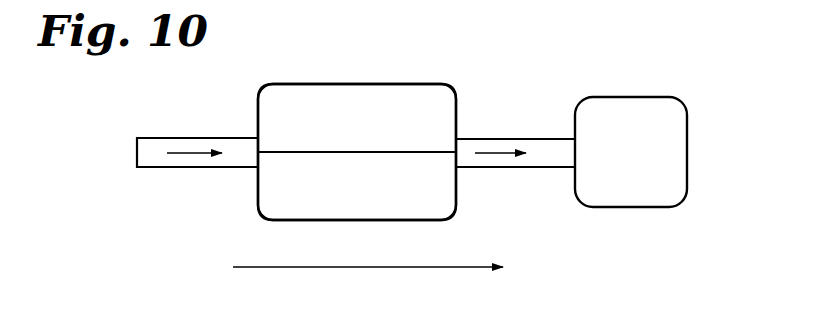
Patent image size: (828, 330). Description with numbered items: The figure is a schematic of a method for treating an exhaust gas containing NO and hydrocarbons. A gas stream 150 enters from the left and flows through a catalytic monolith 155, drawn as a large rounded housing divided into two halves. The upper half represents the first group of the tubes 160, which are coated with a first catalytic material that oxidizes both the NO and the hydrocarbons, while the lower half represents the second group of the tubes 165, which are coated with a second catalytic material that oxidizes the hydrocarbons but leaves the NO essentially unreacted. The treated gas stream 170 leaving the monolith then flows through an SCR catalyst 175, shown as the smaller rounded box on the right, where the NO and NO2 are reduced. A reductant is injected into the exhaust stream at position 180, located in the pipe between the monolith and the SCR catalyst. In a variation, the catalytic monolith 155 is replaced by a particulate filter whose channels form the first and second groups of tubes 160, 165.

The gas stream 150 is at (193, 142).
The catalytic monolith 155 is at (376, 66).
The first group of the tubes 160 is at (430, 92).
The second group of the tubes 165 is at (430, 212).
The treated gas stream 170 is at (476, 139).
The SCR catalyst 175 is at (635, 97).
The position 180 is at (537, 157).